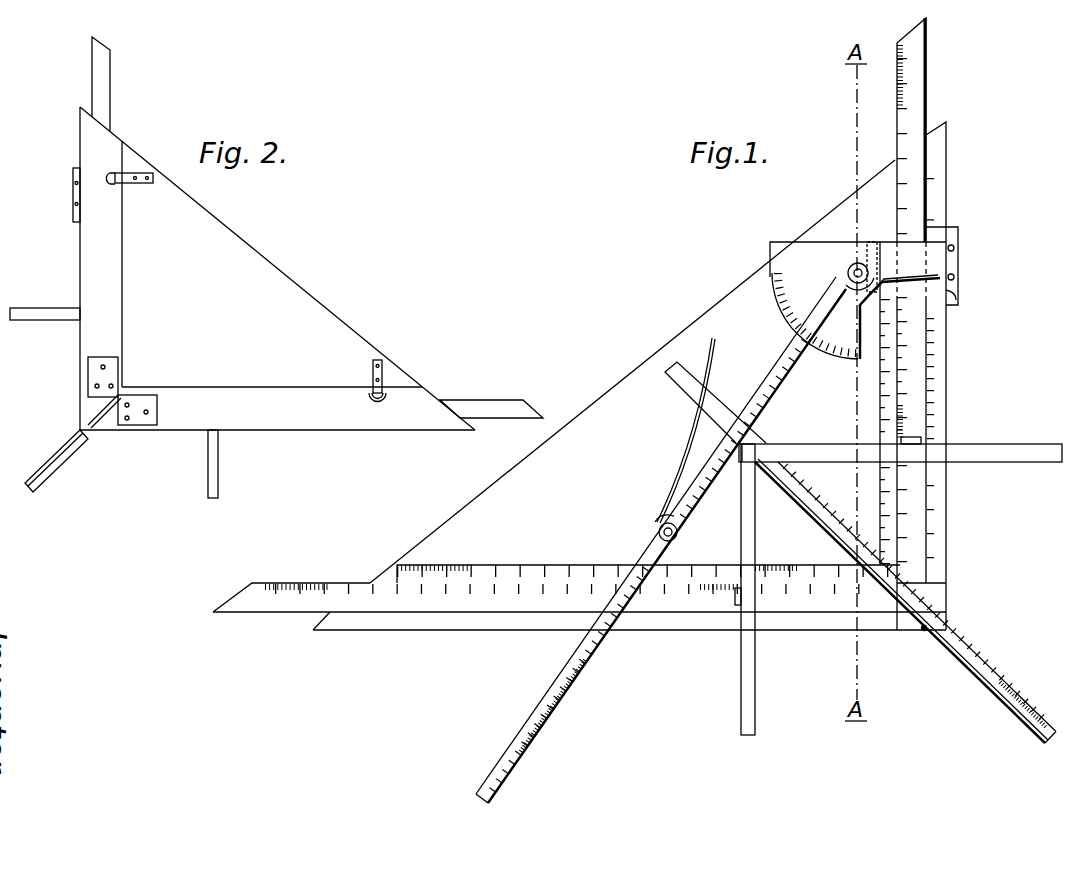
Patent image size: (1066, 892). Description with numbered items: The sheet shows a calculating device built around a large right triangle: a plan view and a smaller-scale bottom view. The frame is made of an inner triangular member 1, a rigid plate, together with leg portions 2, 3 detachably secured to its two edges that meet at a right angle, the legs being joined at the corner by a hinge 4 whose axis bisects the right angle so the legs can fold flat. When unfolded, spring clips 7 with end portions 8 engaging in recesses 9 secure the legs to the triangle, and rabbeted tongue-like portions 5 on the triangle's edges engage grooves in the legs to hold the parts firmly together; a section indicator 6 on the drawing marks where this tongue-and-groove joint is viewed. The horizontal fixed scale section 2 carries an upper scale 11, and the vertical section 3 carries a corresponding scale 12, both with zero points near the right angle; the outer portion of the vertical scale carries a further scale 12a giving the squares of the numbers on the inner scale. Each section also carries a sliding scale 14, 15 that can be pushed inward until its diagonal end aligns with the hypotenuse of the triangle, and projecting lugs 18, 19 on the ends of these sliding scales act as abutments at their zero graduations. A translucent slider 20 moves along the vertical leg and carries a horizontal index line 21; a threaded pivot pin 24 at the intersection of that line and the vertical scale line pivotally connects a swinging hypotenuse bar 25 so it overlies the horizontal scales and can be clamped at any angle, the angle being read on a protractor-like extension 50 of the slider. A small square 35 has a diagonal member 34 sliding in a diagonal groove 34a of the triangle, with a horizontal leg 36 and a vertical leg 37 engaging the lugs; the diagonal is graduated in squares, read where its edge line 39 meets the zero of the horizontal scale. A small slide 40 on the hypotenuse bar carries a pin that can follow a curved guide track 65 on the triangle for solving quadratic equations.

In FIG. 2, the inner triangular member 1 is at (260, 247).
In FIG. 1, the inner triangular member 1 is at (691, 327).
In FIG. 2, the leg portion 2 is at (280, 433).
In FIG. 1, the leg portion 2 is at (460, 628).
In FIG. 2, the leg portion 3 is at (92, 260).
In FIG. 1, the leg portion 3 is at (952, 374).
In FIG. 2, the hinge 4 is at (106, 416).
In FIG. 1, the hinge 4 is at (642, 507).
In FIG. 1, the tongue-like portion 5 is at (830, 480).
In FIG. 1, the section line 6 is at (735, 548).
In FIG. 2, the spring clip 7 is at (137, 186).
In FIG. 2, the end portion 8 is at (108, 186).
In FIG. 2, the recess 9 is at (387, 397).
In FIG. 1, the upper scale 11 is at (520, 563).
In FIG. 1, the scale 12 is at (864, 361).
In FIG. 1, the scale 12a is at (952, 350).
In FIG. 2, the sliding scale 14 is at (503, 402).
In FIG. 1, the sliding scale 14 is at (247, 617).
In FIG. 2, the sliding scale 15 is at (98, 79).
In FIG. 1, the sliding scale 15 is at (928, 98).
In FIG. 1, the projecting lug 18 is at (732, 605).
In FIG. 1, the projecting lug 19 is at (918, 440).
In FIG. 1, the slider 20 is at (968, 238).
In FIG. 1, the index line 21 is at (957, 294).
In FIG. 1, the pivot pin 24 is at (853, 262).
In FIG. 1, the swinging hypotenuse bar 25 is at (766, 371).
In FIG. 2, the diagonal member 34 is at (64, 468).
In FIG. 1, the diagonal member 34 is at (970, 641).
In FIG. 1, the diagonal groove 34a is at (696, 401).
In FIG. 1, the small square 35 is at (800, 434).
In FIG. 2, the horizontal leg 36 is at (48, 314).
In FIG. 1, the horizontal leg 36 is at (1032, 440).
In FIG. 2, the vertical leg 37 is at (208, 476).
In FIG. 1, the vertical leg 37 is at (757, 694).
In FIG. 1, the edge portion 39 is at (927, 635).
In FIG. 1, the small slide 40 is at (658, 533).
In FIG. 1, the protractor-like extension 50 is at (778, 315).
In FIG. 1, the curved guide track 65 is at (694, 455).